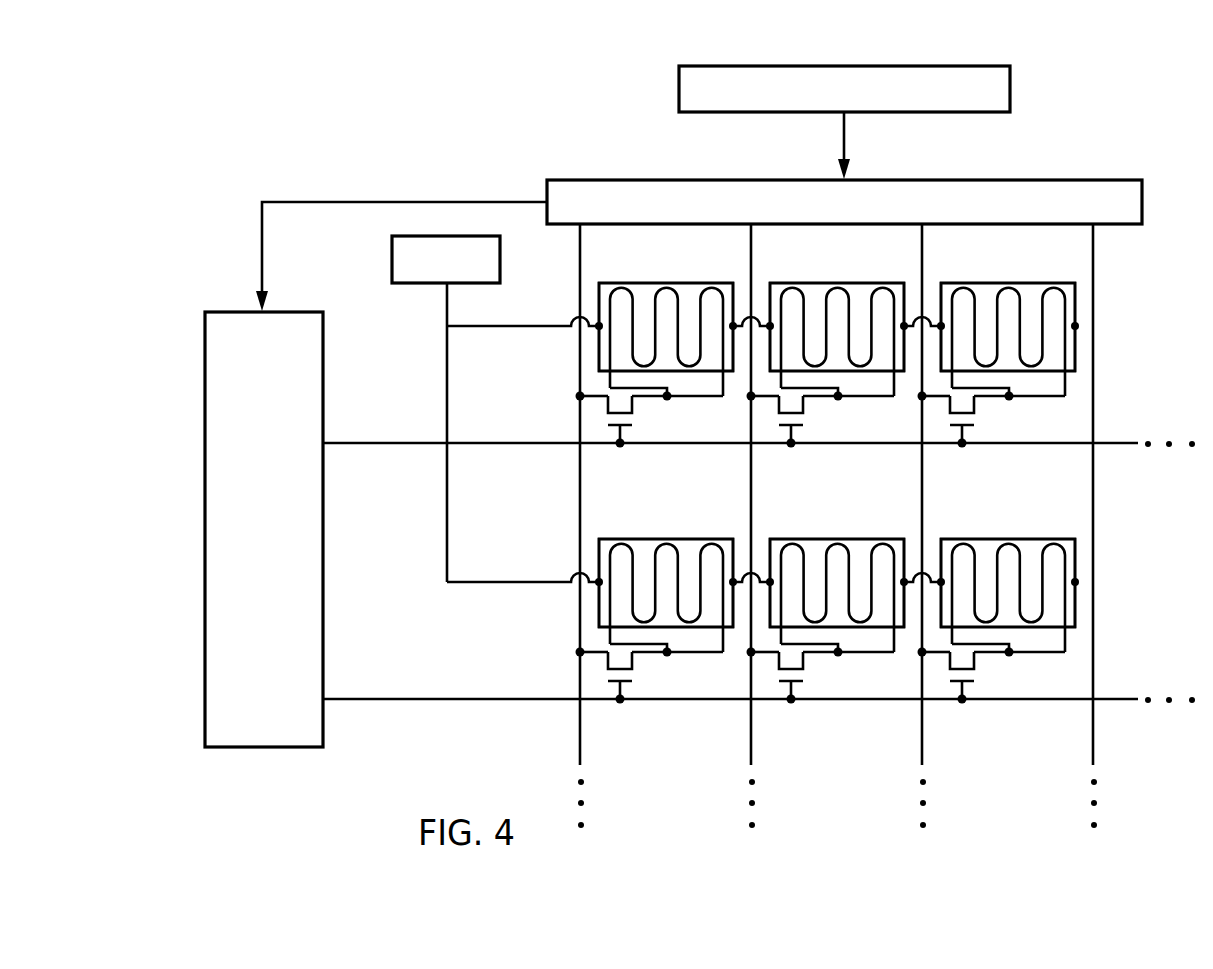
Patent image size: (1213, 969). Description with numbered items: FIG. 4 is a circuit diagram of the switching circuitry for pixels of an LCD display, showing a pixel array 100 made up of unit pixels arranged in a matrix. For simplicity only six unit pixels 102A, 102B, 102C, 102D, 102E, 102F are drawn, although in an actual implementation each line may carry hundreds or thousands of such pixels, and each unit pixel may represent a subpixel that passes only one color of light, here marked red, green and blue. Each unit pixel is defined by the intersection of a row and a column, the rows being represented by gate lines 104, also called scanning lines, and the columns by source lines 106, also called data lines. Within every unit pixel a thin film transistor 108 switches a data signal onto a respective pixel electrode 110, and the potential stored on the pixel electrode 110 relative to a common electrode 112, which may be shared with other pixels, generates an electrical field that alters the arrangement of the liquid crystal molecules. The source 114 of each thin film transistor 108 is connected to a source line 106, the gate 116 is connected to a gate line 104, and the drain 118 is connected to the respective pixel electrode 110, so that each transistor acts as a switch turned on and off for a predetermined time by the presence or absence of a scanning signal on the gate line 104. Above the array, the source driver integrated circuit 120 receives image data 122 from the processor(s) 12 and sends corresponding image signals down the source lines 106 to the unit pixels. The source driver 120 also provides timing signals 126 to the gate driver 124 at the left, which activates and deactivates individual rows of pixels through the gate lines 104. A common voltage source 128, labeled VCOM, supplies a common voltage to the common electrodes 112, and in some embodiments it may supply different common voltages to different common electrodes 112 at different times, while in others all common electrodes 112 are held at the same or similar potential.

The pixel array 100 is at (497, 96).
The processor(s) 12 is at (981, 66).
The source driver integrated circuit 120 is at (978, 180).
The image data 122 is at (846, 148).
The gate driver 124 is at (300, 312).
The timing signals 126 is at (299, 202).
The common voltage (VCOM) source 128 is at (423, 236).
The unit pixel 102A is at (603, 258).
The unit pixel 102B is at (793, 304).
The unit pixel 102C is at (964, 304).
The unit pixel 102D is at (622, 560).
The unit pixel 102E is at (793, 560).
The unit pixel 102F is at (964, 560).
The gate line 104 is at (1115, 443).
The source line 106 is at (580, 755).
The thin film transistor 108 is at (641, 421).
The pixel electrode 110 is at (662, 283).
The common electrode 112 is at (682, 283).
The source 114 is at (578, 397).
The gate 116 is at (621, 446).
The drain 118 is at (668, 399).